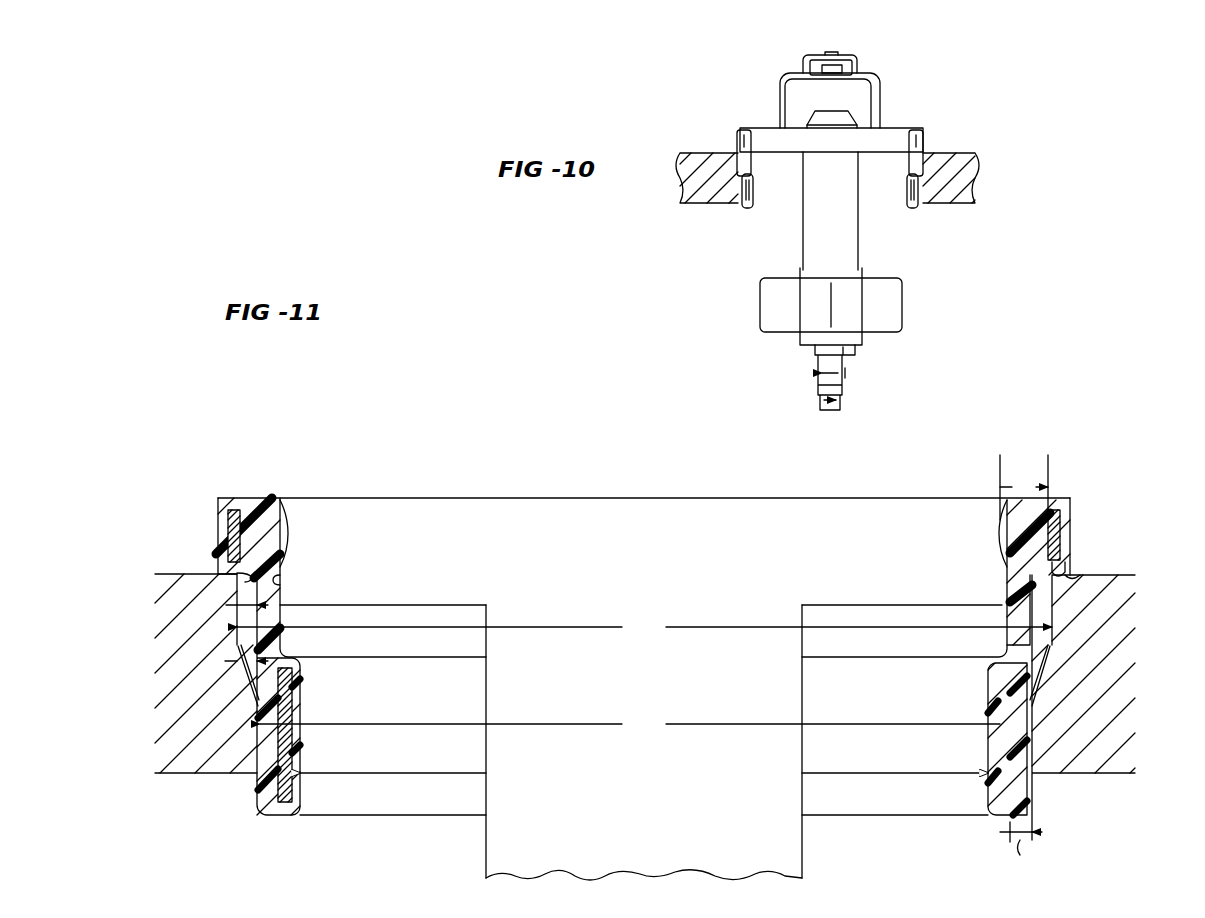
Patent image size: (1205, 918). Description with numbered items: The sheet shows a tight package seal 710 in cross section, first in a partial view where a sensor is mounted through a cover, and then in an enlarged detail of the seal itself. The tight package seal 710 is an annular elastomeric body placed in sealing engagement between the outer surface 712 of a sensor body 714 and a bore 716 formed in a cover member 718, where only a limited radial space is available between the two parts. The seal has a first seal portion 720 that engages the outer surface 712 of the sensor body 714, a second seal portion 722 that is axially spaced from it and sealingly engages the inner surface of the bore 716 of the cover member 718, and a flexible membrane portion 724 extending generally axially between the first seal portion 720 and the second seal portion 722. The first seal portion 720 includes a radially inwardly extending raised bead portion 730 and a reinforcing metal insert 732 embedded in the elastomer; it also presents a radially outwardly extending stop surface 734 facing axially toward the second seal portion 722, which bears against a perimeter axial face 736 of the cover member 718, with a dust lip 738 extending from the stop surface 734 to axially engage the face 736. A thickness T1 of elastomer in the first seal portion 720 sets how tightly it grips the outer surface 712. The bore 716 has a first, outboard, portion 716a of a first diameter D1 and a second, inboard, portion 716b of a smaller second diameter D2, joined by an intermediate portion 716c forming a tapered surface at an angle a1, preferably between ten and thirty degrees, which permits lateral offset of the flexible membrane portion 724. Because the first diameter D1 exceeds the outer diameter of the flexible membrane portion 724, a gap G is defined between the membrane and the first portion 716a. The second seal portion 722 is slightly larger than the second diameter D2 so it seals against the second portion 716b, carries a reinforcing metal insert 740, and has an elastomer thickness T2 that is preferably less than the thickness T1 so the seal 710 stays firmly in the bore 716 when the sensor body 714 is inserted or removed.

In FIG. 10, the tight package seal 710 is at (941, 134).
In FIG. 11, the tight package seal 710 is at (240, 487).
In FIG. 10, the outer surface 712 is at (909, 141).
In FIG. 11, the outer surface 712 is at (283, 583).
In FIG. 10, the sensor body 714 is at (880, 138).
In FIG. 11, the sensor body 714 is at (672, 515).
In FIG. 10, the bore 716 is at (908, 175).
In FIG. 11, the bore 716 is at (1032, 697).
In FIG. 11, the first, outboard, portion 716a is at (262, 592).
In FIG. 11, the second, inboard, portion 716b is at (270, 745).
In FIG. 11, the intermediate portion 716c is at (258, 673).
In FIG. 10, the cover member 718 is at (958, 160).
In FIG. 11, the cover member 718 is at (165, 580).
In FIG. 11, the first seal portion 720 is at (1060, 497).
In FIG. 11, the second seal portion 722 is at (1036, 787).
In FIG. 11, the flexible membrane portion 724 is at (1037, 615).
In FIG. 11, the raised bead portion 730 is at (1000, 527).
In FIG. 11, the reinforcing metal insert 732 is at (1062, 525).
In FIG. 11, the stop surface 734 is at (1062, 572).
In FIG. 11, the perimeter axial face 736 is at (1078, 575).
In FIG. 11, the dust lip 738 is at (218, 574).
In FIG. 11, the reinforcing metal insert 740 is at (1000, 762).
In FIG. 11, the gap G is at (243, 599).
In FIG. 11, the angle a1 is at (233, 662).
In FIG. 11, the thickness T1 is at (1024, 487).
In FIG. 11, the thickness T2 is at (1021, 853).
In FIG. 11, the first diameter D1 is at (644, 629).
In FIG. 11, the second diameter D2 is at (630, 726).